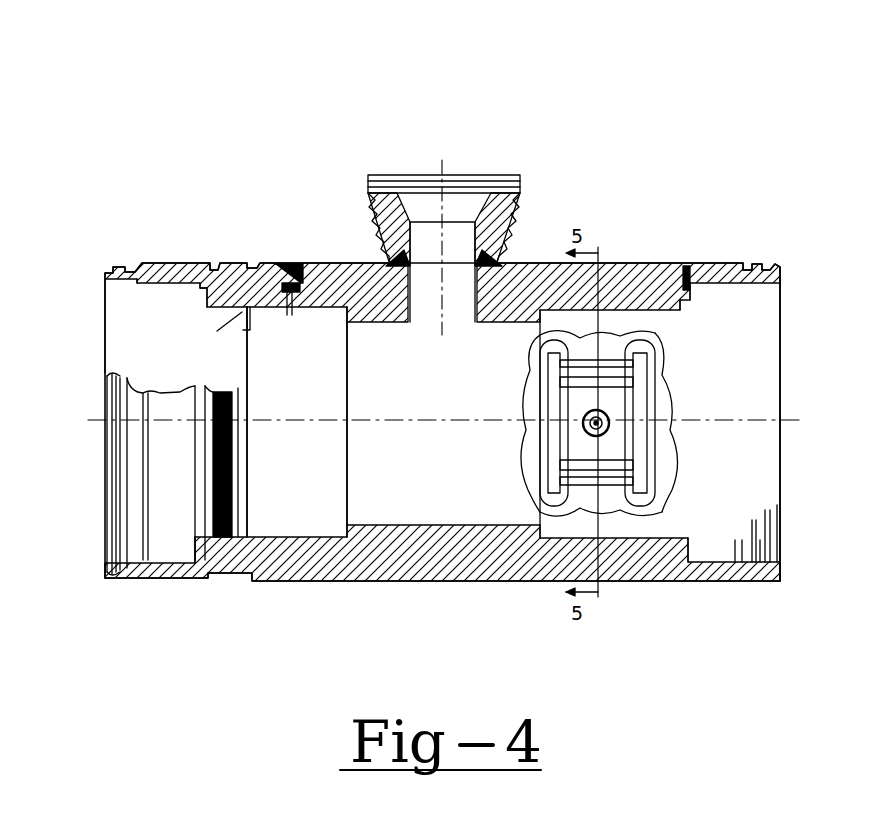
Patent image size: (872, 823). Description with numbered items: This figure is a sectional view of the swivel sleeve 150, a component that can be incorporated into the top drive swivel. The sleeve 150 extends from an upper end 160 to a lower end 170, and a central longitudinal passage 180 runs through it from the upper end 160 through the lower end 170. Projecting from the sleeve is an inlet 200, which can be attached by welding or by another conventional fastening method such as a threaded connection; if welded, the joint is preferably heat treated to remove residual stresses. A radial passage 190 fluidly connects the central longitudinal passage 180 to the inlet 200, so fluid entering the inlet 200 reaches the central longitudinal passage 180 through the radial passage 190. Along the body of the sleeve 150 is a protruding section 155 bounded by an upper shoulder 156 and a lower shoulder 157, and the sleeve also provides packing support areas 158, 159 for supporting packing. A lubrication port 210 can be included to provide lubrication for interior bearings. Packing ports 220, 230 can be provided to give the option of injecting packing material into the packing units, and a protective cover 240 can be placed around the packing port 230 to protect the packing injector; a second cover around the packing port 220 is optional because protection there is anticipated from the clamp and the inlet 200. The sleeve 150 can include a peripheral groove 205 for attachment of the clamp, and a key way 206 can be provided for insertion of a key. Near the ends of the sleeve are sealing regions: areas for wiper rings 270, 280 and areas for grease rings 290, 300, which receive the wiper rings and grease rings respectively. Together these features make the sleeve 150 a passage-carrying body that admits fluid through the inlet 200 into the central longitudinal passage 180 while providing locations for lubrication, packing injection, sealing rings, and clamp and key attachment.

The swivel sleeve 150 is at (254, 682).
The protruding section 155 is at (395, 323).
The upper shoulder 156 is at (338, 320).
The lower shoulder 157 is at (540, 325).
The packing support area 158 is at (220, 335).
The packing support area 159 is at (642, 267).
The upper end 160 is at (107, 342).
The lower end 170 is at (780, 338).
The central longitudinal passage 180 is at (432, 482).
The radial passage 190 is at (433, 298).
The inlet 200 is at (480, 174).
The peripheral groove 205 is at (212, 578).
The key way 206 is at (220, 262).
The lubrication port 210 is at (690, 265).
The packing port 220 is at (288, 262).
The packing port 230 is at (612, 424).
The protective cover 240 is at (547, 440).
The area for wiper ring 270 is at (110, 580).
The area for wiper ring 280 is at (775, 585).
The area for grease ring 290 is at (120, 580).
The area for grease ring 300 is at (753, 583).